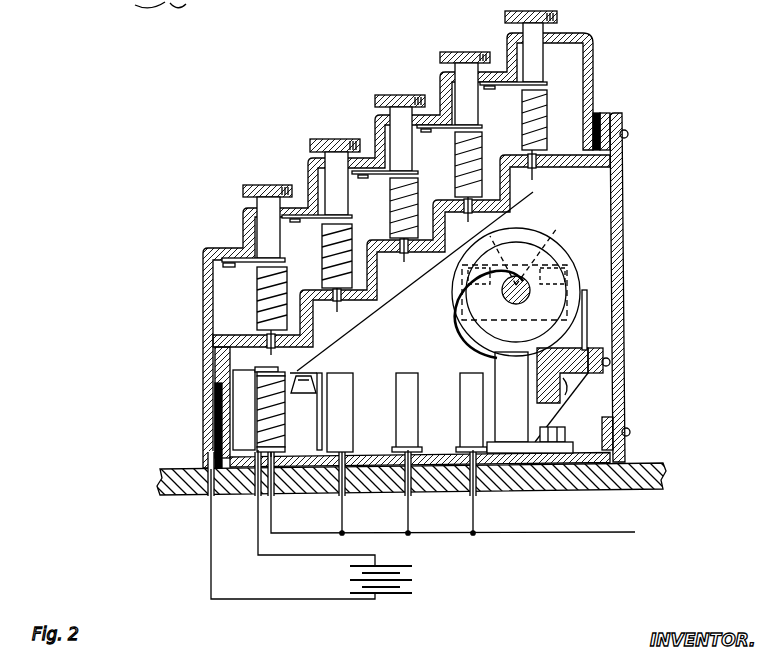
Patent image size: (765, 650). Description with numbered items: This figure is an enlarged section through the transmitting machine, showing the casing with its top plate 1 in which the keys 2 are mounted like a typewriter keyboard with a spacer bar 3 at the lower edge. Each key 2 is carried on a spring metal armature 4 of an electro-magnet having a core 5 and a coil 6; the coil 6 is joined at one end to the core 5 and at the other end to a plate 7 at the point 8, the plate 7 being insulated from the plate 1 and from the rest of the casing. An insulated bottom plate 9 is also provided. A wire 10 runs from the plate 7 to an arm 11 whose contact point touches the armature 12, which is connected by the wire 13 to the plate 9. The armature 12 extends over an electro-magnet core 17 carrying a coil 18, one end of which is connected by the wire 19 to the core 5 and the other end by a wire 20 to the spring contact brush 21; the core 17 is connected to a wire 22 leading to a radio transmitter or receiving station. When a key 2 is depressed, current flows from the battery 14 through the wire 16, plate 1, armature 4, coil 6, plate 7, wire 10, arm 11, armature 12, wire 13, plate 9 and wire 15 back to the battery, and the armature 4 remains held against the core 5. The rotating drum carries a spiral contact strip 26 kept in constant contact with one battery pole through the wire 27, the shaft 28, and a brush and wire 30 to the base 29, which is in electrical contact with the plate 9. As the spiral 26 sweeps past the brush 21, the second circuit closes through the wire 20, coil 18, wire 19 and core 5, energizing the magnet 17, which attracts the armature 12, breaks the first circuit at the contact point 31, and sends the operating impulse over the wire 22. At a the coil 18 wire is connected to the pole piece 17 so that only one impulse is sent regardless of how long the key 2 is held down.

The top plate 1 is at (438, 82).
The key 2 is at (541, 53).
The spacer bar 3 is at (262, 184).
The spring metal armature 4 is at (536, 93).
The core 5 is at (549, 114).
The coil 6 is at (546, 106).
The plate 7 is at (585, 168).
The point 8 is at (543, 168).
The bottom plate 9 is at (582, 462).
The wire 10 is at (230, 362).
The arm 11 is at (262, 366).
The armature 12 is at (292, 385).
The wire 13 is at (322, 376).
The battery 14 is at (406, 580).
The wire 15 is at (258, 528).
The wire 16 is at (211, 553).
The electro-magnet core 17 is at (255, 400).
The coil 18 is at (233, 418).
The wire 19 is at (395, 300).
The wire 20 is at (558, 412).
The spring contact brush 21 is at (587, 322).
The wire 22 is at (275, 522).
The spiral contact strip 26 is at (510, 228).
The wire 27 is at (524, 279).
The shaft 28 is at (557, 287).
The base 29 is at (511, 397).
The brush and wire 30 is at (456, 342).
The contact point 31 is at (278, 369).
The coil wire connection a is at (273, 447).